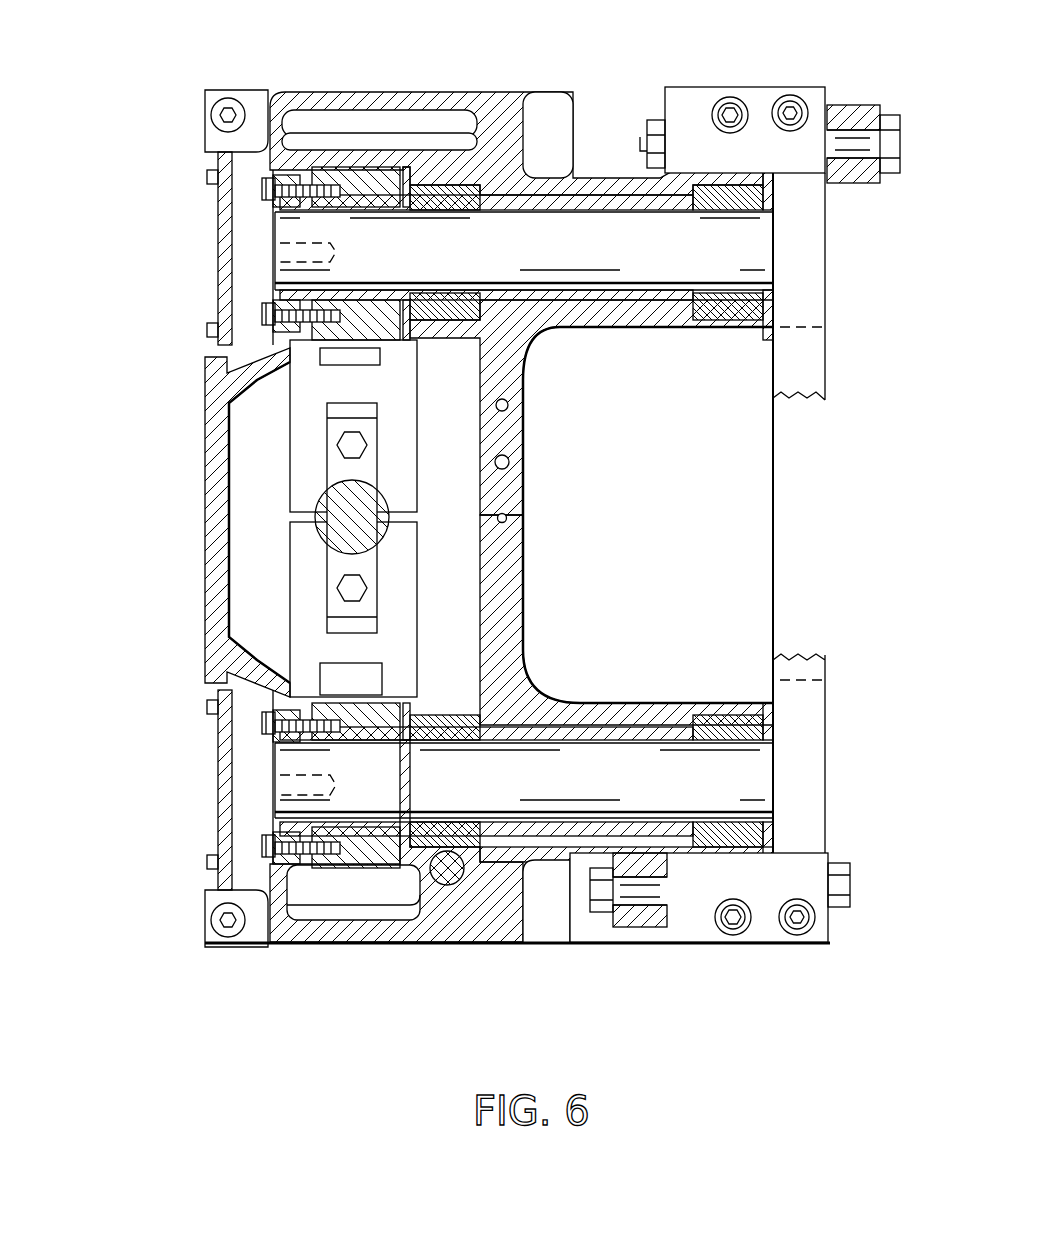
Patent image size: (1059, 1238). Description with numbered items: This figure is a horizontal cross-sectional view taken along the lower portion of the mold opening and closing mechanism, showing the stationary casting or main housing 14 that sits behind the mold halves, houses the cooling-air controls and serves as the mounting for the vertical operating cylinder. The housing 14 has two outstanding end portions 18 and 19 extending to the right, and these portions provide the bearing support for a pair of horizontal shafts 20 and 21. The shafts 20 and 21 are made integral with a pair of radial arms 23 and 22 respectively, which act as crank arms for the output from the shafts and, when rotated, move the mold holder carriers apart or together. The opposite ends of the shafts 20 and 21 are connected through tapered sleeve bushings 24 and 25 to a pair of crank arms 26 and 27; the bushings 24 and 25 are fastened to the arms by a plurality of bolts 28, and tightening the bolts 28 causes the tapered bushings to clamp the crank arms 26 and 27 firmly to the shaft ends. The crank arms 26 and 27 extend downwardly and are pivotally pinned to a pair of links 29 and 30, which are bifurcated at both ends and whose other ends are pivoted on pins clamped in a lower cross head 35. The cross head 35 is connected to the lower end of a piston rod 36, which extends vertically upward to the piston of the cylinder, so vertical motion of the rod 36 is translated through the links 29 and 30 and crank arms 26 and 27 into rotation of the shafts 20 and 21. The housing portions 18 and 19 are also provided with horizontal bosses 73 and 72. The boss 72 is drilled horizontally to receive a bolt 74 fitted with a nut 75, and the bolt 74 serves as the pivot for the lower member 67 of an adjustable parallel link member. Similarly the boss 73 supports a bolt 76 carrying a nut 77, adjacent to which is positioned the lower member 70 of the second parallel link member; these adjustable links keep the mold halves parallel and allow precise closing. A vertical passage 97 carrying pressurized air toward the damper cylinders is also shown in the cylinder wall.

The casting or main housing 14 is at (197, 467).
The outstanding end portion 18 is at (652, 712).
The outstanding end portion 19 is at (645, 312).
The horizontal shaft 20 is at (528, 252).
The horizontal shaft 21 is at (528, 785).
The radial arm 22 is at (815, 680).
The radial arm 23 is at (815, 365).
The tapered sleeve bushing 24 is at (285, 205).
The tapered sleeve bushing 25 is at (285, 738).
The crank arm 26 is at (378, 185).
The crank arm 27 is at (370, 868).
The bolts 28 is at (262, 190).
The link 29 is at (305, 447).
The link 30 is at (305, 560).
The lower cross head 35 is at (365, 570).
The piston rod 36 is at (367, 497).
The lower section of parallel link member 67 is at (872, 108).
The lower member 70 is at (630, 920).
The horizontal boss 72 is at (818, 100).
The horizontal boss 73 is at (815, 950).
The bolt 74 is at (890, 155).
The nut 75 is at (657, 122).
The bolt 76 is at (852, 900).
The nut 77 is at (590, 910).
The vertical passage 97 is at (508, 405).